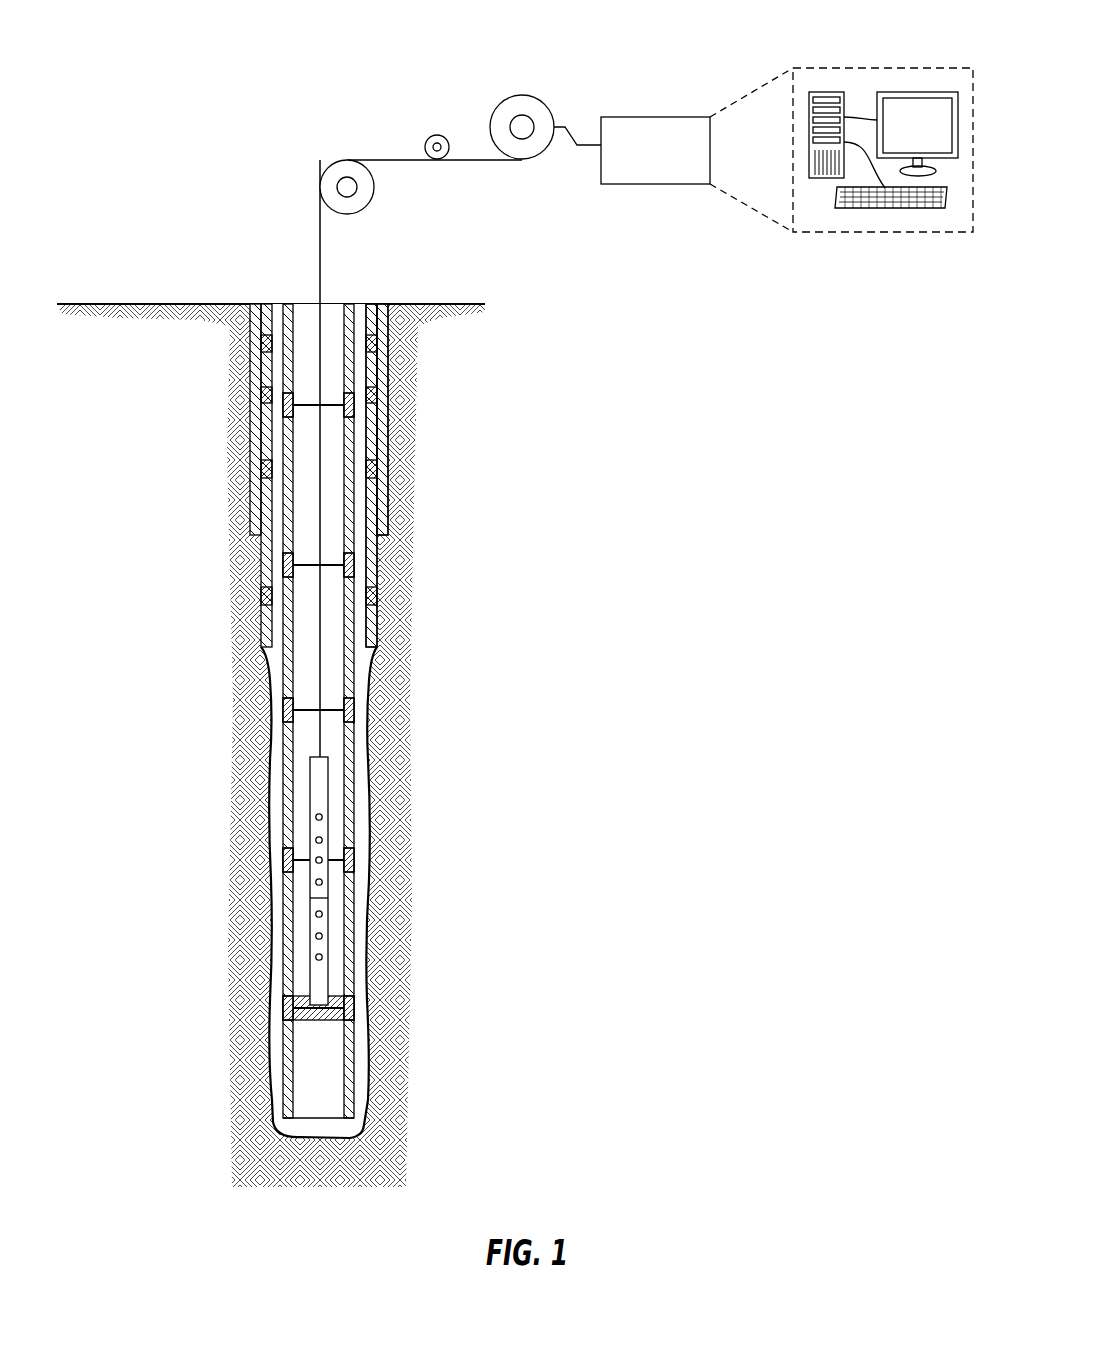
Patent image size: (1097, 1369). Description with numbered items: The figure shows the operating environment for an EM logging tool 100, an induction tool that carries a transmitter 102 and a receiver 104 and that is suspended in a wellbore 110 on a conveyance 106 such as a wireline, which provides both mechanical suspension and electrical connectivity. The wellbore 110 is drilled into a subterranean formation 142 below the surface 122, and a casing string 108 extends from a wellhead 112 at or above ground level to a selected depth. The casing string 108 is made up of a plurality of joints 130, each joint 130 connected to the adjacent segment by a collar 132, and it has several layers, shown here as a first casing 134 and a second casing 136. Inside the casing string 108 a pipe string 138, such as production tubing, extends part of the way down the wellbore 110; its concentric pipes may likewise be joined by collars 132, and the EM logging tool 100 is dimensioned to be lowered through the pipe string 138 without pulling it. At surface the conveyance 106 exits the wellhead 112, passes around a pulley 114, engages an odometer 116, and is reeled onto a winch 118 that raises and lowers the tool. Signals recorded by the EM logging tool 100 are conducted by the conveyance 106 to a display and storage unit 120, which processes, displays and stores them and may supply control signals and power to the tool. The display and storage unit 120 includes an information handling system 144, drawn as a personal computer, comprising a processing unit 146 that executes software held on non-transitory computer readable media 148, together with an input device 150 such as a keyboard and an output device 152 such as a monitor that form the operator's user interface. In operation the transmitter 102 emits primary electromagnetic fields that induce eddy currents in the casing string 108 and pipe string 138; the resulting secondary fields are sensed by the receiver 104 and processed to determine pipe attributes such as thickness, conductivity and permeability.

The EM logging tool 100 is at (318, 881).
The transmitter 102 is at (324, 818).
The receiver 104 is at (324, 841).
The conveyance 106 is at (320, 262).
The casing string 108 is at (327, 694).
The wellbore 110 is at (370, 650).
The wellhead 112 is at (305, 292).
The pulley 114 is at (321, 175).
The odometer 116 is at (440, 135).
The winch 118 is at (545, 96).
The display and storage unit 120 is at (665, 117).
The surface 122 is at (96, 303).
The joint 130 is at (265, 315).
The collar 132 is at (262, 348).
The first casing 134 is at (377, 558).
The second casing 136 is at (383, 513).
The pipe string 138 is at (355, 1077).
The subterranean formation 142 is at (768, 317).
The information handling system 144 is at (841, 157).
The processing unit 146 is at (822, 190).
The non-transitory computer readable media 148 is at (825, 92).
The input device 150 is at (888, 208).
The output device 152 is at (918, 92).